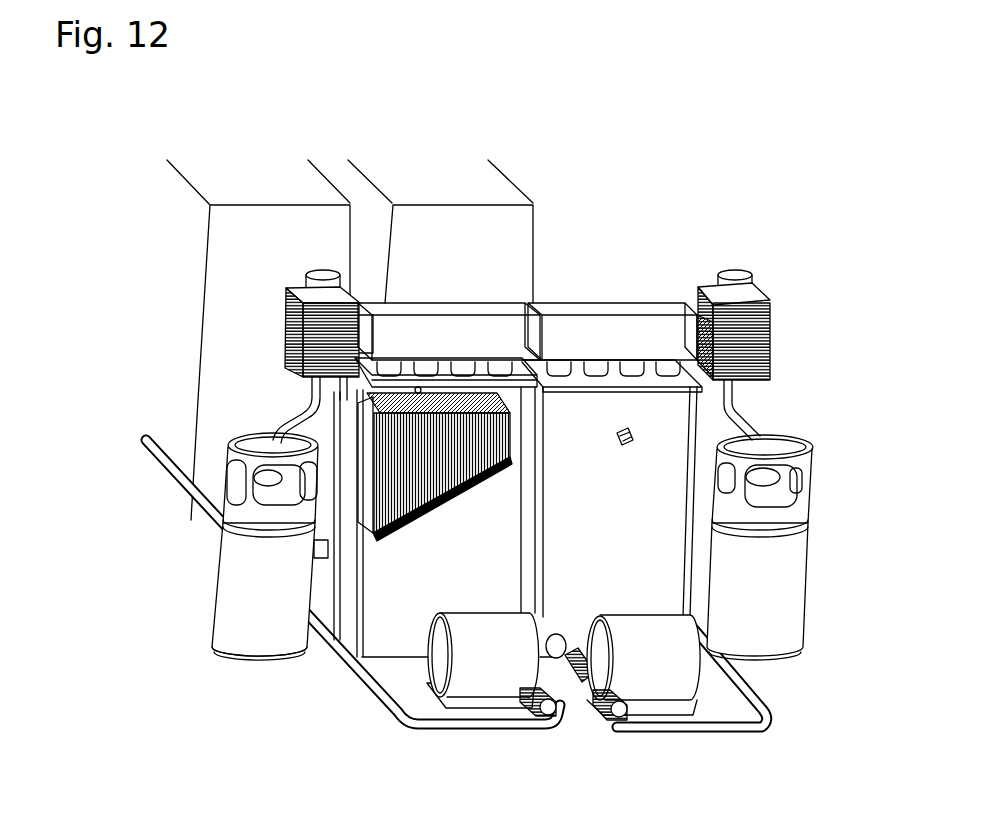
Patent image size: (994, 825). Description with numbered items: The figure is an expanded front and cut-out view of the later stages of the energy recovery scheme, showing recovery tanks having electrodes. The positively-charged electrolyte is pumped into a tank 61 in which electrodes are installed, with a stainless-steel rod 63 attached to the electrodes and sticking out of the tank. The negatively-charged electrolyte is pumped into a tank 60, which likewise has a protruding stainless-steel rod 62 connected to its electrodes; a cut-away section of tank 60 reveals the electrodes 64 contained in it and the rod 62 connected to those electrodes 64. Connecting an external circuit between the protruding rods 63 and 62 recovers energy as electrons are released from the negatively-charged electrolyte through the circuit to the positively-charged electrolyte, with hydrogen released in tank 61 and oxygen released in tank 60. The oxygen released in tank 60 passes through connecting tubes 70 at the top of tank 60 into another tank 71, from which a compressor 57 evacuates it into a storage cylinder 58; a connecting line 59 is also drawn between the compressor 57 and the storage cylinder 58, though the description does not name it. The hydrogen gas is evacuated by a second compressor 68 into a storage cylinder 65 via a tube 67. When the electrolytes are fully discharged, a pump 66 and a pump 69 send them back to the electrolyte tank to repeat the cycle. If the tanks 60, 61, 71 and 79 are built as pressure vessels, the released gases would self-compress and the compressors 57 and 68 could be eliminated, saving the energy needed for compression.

The compressor 57 is at (278, 337).
The first connecting tube 59 is at (280, 422).
The electrodes 64 is at (371, 446).
The tank 71 is at (498, 337).
The tank 79 is at (627, 330).
The stainless-steel rod 63 is at (625, 432).
The compressor 68 is at (773, 342).
The tube 67 is at (757, 420).
The connecting tubes 70 is at (412, 367).
The storage cylinder 58 is at (248, 547).
The storage cylinder 65 is at (792, 577).
The stainless-steel rod 62 is at (440, 450).
The tank 61 is at (648, 565).
The tank 60 is at (407, 628).
The pump 69 is at (498, 677).
The pump 66 is at (652, 677).